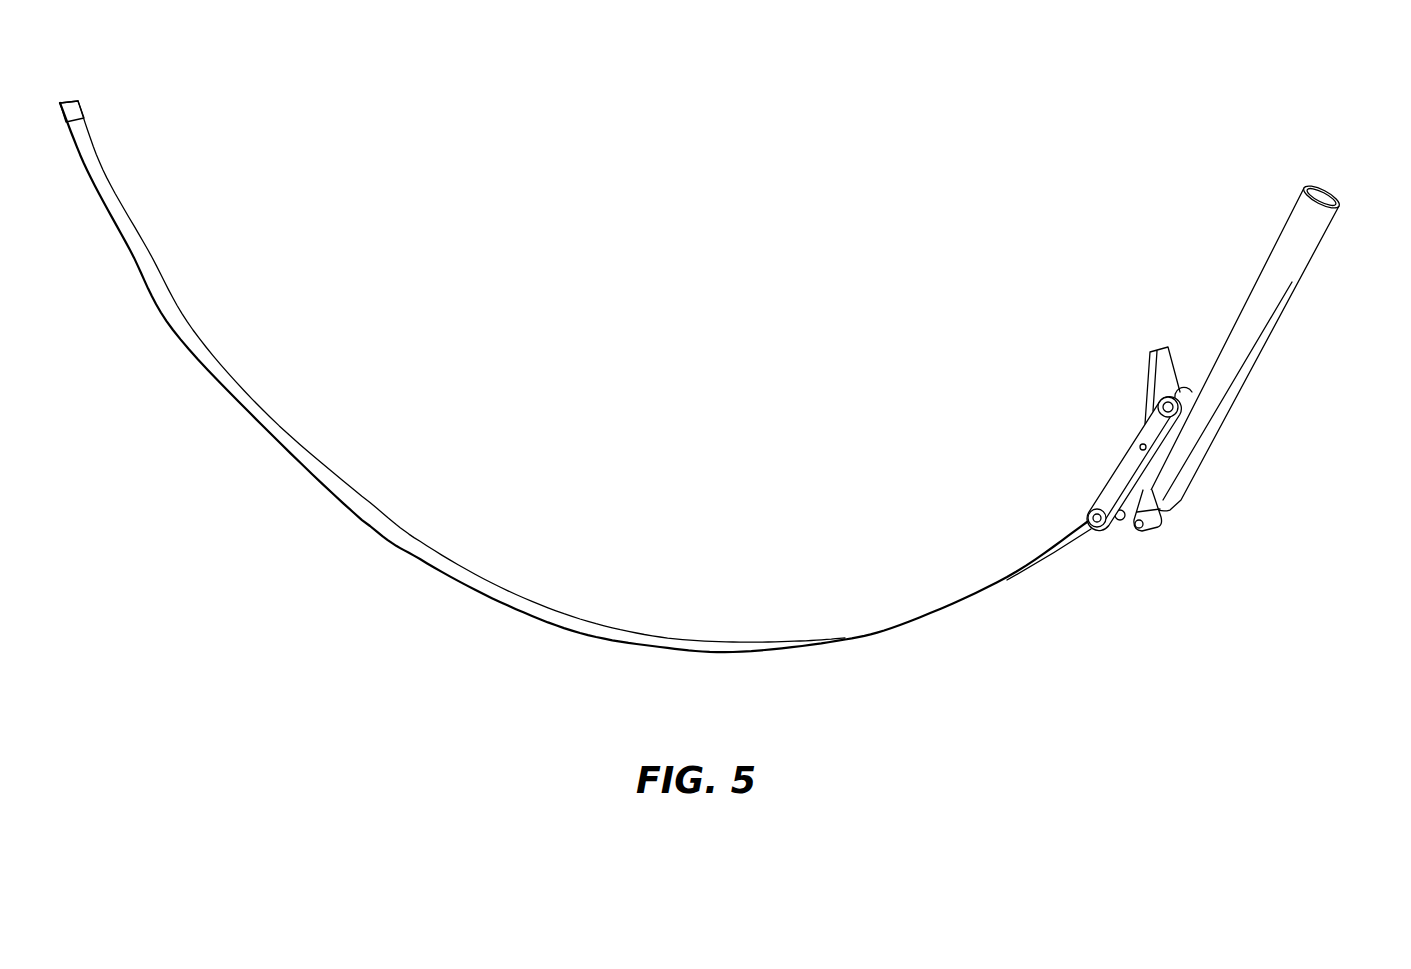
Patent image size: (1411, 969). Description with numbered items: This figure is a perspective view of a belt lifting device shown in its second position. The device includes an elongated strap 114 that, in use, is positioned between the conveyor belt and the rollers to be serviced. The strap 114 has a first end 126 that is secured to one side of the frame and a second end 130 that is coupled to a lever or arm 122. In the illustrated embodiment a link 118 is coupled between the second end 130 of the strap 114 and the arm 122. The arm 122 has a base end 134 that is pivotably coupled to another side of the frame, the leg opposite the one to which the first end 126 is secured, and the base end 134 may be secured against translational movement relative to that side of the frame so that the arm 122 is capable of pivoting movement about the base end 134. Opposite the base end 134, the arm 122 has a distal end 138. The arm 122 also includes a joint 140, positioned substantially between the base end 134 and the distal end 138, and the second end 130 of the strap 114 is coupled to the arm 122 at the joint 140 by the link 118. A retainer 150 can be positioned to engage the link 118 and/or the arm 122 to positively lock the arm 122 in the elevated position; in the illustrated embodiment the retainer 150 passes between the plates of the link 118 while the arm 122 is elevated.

The strap 114 is at (393, 500).
The link 118 is at (1133, 463).
The arm 122 is at (1288, 305).
The first end 126 is at (77, 122).
The second end 130 is at (1086, 521).
The base end 134 is at (1167, 472).
The distal end 138 is at (1305, 212).
The joint 140 is at (1189, 388).
The retainer 150 is at (1146, 368).